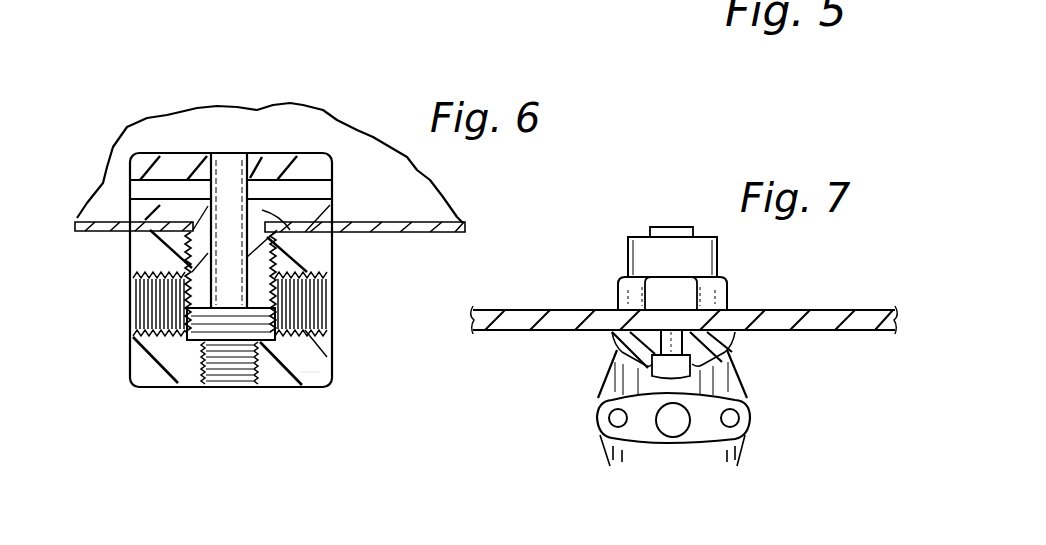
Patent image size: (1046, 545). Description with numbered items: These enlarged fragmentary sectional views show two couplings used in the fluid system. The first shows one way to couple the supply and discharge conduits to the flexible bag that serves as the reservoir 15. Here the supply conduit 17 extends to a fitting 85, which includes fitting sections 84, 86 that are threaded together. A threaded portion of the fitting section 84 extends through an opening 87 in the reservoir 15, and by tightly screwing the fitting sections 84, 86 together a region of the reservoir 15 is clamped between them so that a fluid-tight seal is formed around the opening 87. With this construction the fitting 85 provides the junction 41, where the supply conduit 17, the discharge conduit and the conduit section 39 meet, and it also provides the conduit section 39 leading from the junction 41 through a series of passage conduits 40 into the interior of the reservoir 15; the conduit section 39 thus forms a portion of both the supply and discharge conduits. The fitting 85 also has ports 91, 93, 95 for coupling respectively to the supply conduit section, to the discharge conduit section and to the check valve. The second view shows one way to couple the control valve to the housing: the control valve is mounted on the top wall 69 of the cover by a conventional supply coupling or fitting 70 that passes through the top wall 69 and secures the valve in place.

In FIG. 6, the reservoir 15 is at (100, 200).
In FIG. 7, the supply conduit 17 is at (745, 364).
In FIG. 6, the conduit section 39 is at (330, 252).
In FIG. 6, the passage conduits 40 is at (165, 185).
In FIG. 6, the junction 41 is at (288, 390).
In FIG. 7, the top wall 69 is at (816, 310).
In FIG. 7, the supply coupling or fitting 70 is at (618, 302).
In FIG. 6, the fitting section 84 is at (335, 165).
In FIG. 6, the fitting 85 is at (128, 369).
In FIG. 6, the fitting section 86 is at (322, 374).
In FIG. 6, the opening 87 is at (280, 218).
In FIG. 6, the port 91 is at (330, 302).
In FIG. 6, the port 93 is at (140, 292).
In FIG. 6, the port 95 is at (215, 388).